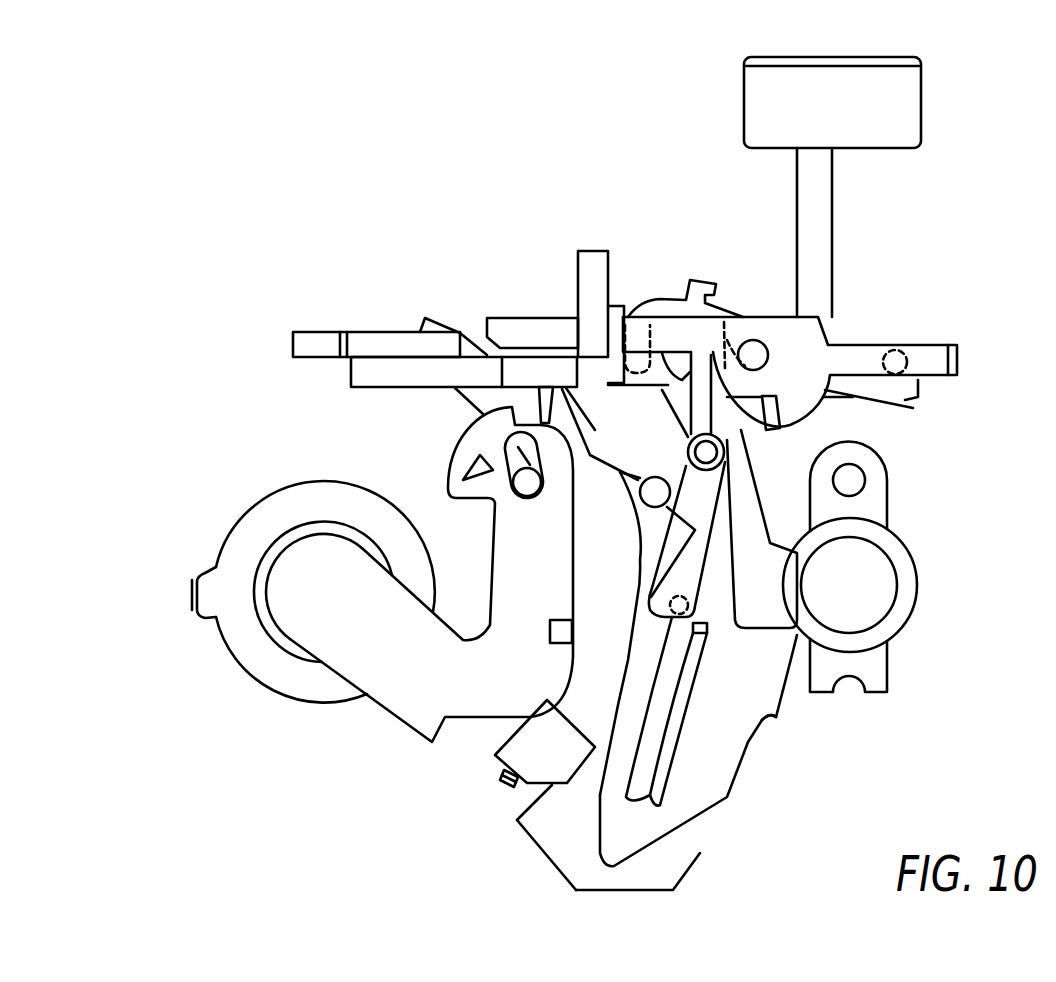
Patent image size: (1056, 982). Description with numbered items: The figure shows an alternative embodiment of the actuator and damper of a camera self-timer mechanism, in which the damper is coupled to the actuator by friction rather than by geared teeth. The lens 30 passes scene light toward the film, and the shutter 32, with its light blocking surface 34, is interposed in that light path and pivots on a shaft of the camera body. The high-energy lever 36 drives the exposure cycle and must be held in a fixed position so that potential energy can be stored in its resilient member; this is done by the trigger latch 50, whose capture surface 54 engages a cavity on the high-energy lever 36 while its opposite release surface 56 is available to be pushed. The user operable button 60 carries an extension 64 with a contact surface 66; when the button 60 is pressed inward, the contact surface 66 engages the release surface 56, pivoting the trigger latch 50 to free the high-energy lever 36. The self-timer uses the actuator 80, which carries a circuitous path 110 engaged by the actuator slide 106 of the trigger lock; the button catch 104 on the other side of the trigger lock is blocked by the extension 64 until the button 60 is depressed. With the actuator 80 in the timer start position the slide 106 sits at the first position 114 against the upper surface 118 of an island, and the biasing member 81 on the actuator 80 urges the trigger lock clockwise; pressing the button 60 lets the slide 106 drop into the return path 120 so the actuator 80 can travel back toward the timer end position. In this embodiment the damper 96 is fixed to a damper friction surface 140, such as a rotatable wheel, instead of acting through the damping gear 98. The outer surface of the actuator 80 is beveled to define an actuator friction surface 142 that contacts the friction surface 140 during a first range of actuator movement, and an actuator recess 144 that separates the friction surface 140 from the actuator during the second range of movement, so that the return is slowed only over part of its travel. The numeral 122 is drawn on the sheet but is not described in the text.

The lens 30 is at (264, 552).
The shutter 32 is at (505, 689).
The light blocking surface 34 is at (305, 617).
The high-energy lever 36 is at (355, 377).
The trigger latch 50 is at (866, 390).
The capture surface 54 is at (632, 323).
The release surface 56 is at (915, 407).
The button 60 is at (900, 105).
The extension 64 is at (868, 322).
The contact surface 66 is at (905, 356).
The actuator 80 is at (581, 799).
The biasing member 81 is at (663, 390).
The damper 96 is at (893, 634).
The damping gear 98 is at (906, 553).
The button catch 104 is at (740, 322).
The actuator slide 106 is at (690, 606).
The circuitous path 110 is at (721, 655).
The first position 114 is at (703, 613).
The upper surface 118 is at (710, 634).
The return path 120 is at (645, 733).
The lower edge 122 is at (600, 845).
The damper friction surface 140 is at (888, 588).
The actuator friction surface 142 is at (790, 695).
The actuator recess 144 is at (777, 720).